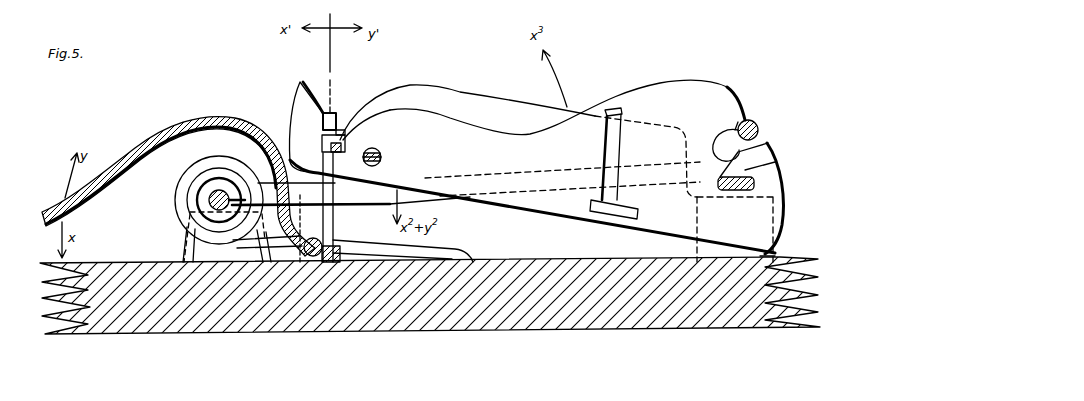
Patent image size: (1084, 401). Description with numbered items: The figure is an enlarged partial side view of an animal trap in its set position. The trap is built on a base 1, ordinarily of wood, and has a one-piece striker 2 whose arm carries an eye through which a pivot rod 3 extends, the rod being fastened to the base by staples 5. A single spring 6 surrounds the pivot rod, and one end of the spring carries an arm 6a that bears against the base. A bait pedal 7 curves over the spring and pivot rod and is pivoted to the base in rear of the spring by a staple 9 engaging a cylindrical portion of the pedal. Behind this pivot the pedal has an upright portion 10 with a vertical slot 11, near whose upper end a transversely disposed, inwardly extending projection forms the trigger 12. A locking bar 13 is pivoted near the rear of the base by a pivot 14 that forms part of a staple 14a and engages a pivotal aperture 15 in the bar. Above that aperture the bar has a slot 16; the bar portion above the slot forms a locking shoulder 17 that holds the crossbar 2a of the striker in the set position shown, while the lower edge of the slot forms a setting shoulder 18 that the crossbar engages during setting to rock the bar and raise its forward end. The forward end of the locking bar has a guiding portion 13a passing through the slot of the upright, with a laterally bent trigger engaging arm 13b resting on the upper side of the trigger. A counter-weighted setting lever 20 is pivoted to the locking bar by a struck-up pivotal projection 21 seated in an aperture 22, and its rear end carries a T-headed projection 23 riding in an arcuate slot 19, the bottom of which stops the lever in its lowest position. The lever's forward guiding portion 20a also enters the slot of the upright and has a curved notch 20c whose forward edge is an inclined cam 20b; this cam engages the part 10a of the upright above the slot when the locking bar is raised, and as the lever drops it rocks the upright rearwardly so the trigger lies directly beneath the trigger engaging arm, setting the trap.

The base 1 is at (417, 319).
The striker 2 is at (384, 190).
The crossbar 2a is at (750, 120).
The pivot rod 3 is at (208, 195).
The staples 5 is at (185, 235).
The spring 6 is at (200, 172).
The arm 6a is at (466, 253).
The bait pedal 7 is at (133, 153).
The staple 9 is at (312, 259).
The upright portion 10 is at (334, 246).
The part of upright portion above the slot 10a is at (329, 112).
The vertical slot 11 is at (335, 207).
The trigger 12 is at (334, 131).
The locking bar 13 is at (496, 134).
The guiding portion 13a is at (321, 148).
The trigger engaging arm 13b is at (338, 132).
The pivot 14 is at (774, 168).
The staple 14a is at (770, 257).
The pivotal aperture 15 is at (755, 186).
The slot 16 is at (720, 140).
The locking shoulder 17 is at (728, 112).
The setting shoulder 18 is at (763, 142).
The arcuate slot 19 is at (628, 133).
The setting lever 20 is at (452, 91).
The guiding portion 20a is at (297, 118).
The inclined cam 20b is at (309, 85).
The curved notch 20c is at (366, 114).
The pivotal projection 21 is at (383, 158).
The aperture 22 is at (377, 151).
The T-headed projection 23 is at (602, 211).